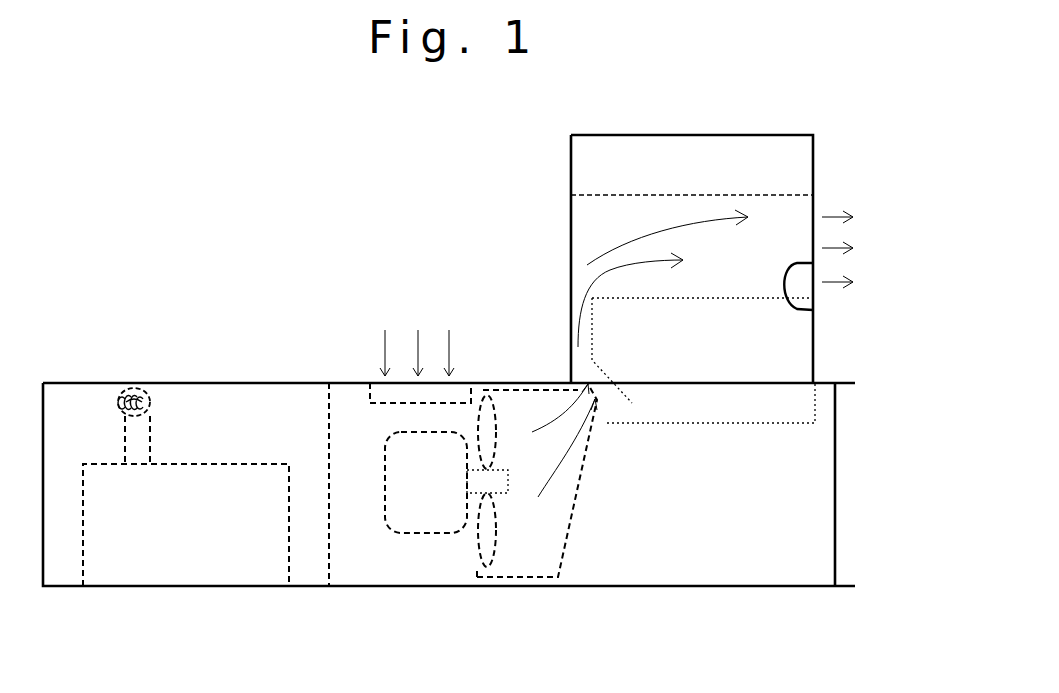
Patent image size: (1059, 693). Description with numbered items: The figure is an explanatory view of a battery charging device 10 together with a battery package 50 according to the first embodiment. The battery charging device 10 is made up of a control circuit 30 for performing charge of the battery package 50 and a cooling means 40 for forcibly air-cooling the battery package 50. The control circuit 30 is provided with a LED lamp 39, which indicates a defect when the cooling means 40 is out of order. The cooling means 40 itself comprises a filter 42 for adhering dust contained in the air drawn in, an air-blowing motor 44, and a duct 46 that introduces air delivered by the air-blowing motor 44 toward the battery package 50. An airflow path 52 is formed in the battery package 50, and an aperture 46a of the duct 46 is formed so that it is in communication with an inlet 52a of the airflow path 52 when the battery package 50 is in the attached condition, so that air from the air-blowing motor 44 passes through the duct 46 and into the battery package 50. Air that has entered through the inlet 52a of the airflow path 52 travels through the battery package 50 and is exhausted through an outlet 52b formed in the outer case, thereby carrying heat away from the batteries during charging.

The battery charging device 10 is at (68, 383).
The control circuit 30 is at (233, 464).
The LED lamp 39 is at (154, 398).
The cooling means 40 is at (343, 408).
The filter 42 is at (428, 396).
The air-blowing motor 44 is at (425, 533).
The duct 46 is at (510, 578).
The aperture 46a is at (560, 388).
The battery package 50 is at (675, 135).
The airflow path 52 is at (752, 195).
The inlet 52a is at (580, 383).
The outlet 52b is at (813, 310).